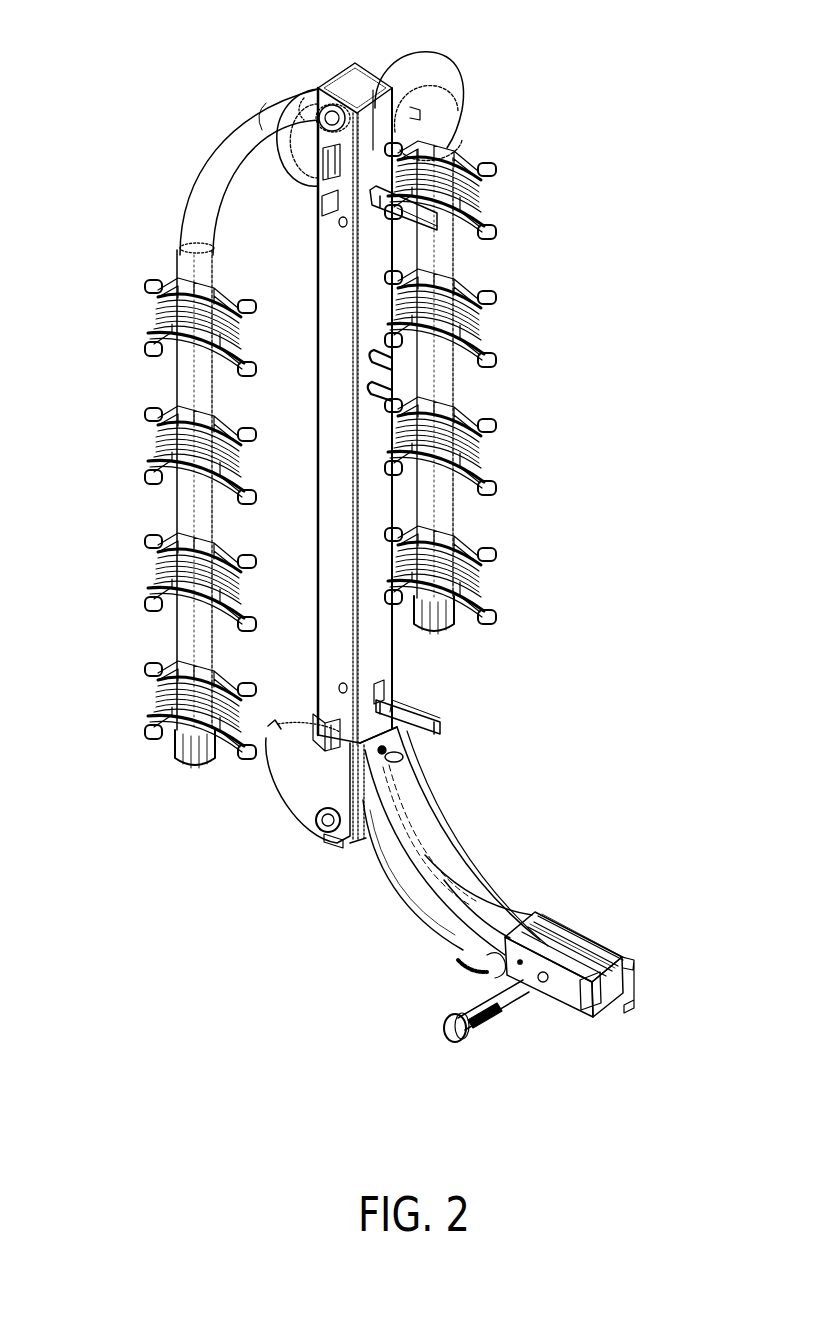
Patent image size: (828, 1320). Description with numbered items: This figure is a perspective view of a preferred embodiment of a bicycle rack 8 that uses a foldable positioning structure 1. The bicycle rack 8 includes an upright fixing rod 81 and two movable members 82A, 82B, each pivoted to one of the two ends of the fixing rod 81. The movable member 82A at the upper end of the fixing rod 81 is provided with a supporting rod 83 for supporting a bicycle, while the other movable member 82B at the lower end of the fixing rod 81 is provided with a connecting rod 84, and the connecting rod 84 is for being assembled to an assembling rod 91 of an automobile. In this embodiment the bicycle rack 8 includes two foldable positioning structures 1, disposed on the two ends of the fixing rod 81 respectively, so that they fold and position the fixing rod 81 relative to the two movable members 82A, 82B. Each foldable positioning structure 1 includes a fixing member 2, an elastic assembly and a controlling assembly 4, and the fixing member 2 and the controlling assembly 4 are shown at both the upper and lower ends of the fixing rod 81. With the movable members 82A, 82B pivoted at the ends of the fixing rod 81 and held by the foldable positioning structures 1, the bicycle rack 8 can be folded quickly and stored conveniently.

The foldable positioning structure 1 is at (320, 202).
The fixing member 2 is at (318, 150).
The controlling assembly 4 is at (408, 224).
The bicycle rack 8 is at (512, 270).
The fixing rod 81 is at (390, 661).
The movable member 82A is at (408, 112).
The movable member 82B is at (318, 793).
The supporting rod 83 is at (187, 381).
The connecting rod 84 is at (488, 908).
The assembling rod 91 is at (586, 940).